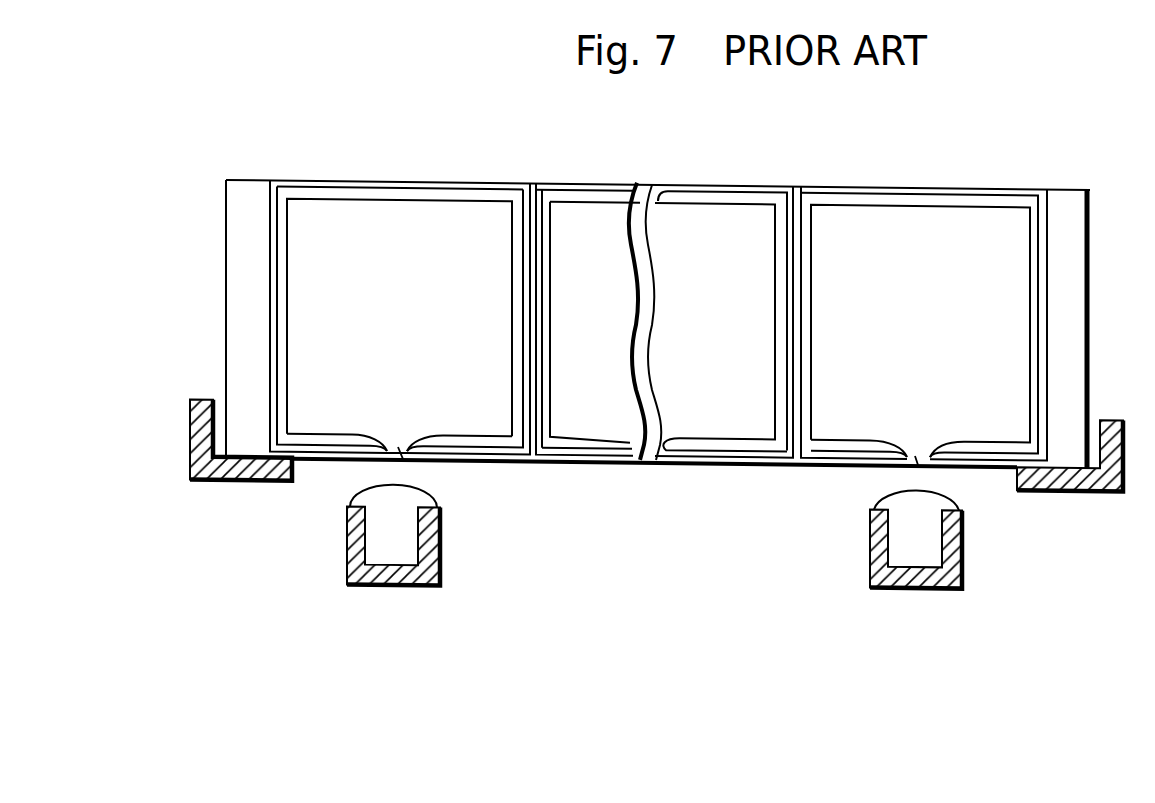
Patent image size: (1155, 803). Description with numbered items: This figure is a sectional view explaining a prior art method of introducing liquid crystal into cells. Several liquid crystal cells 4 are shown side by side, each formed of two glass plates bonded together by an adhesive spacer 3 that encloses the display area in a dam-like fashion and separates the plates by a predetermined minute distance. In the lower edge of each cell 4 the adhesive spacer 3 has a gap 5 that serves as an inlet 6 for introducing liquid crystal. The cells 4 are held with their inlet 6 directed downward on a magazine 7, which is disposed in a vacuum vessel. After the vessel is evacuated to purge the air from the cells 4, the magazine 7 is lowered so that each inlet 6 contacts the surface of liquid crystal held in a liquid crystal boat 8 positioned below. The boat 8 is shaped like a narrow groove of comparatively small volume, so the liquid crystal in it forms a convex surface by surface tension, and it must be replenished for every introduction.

The adhesive spacer 3 is at (476, 194).
The cell 4 is at (783, 197).
The gap 5 is at (380, 463).
The inlet 6 is at (410, 463).
The magazine 7 is at (213, 481).
The liquid crystal boat 8 is at (441, 547).